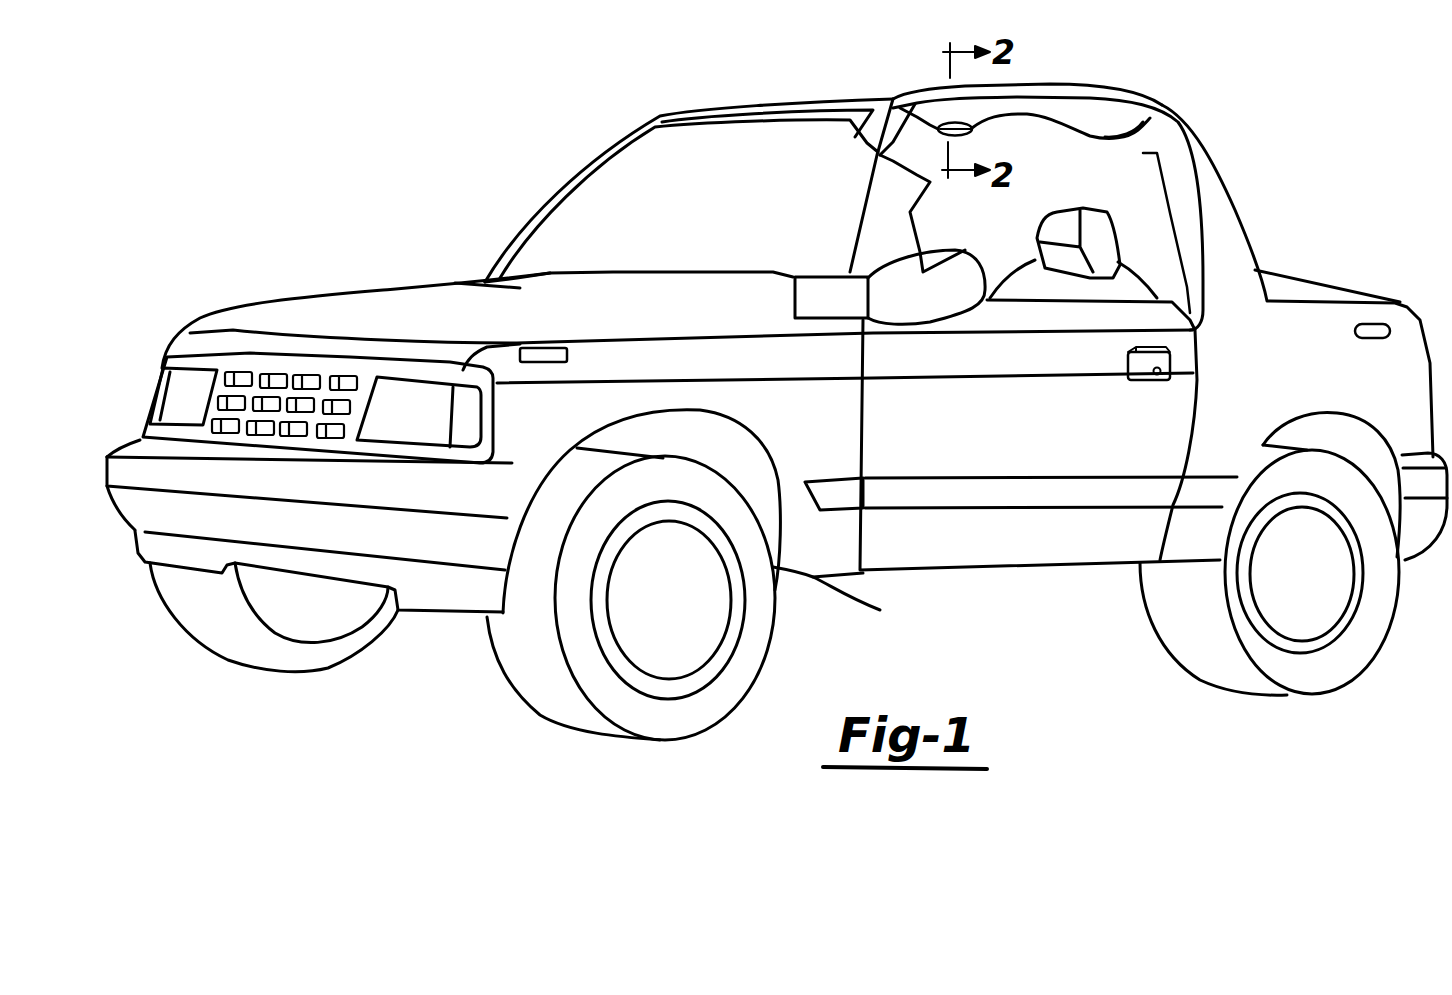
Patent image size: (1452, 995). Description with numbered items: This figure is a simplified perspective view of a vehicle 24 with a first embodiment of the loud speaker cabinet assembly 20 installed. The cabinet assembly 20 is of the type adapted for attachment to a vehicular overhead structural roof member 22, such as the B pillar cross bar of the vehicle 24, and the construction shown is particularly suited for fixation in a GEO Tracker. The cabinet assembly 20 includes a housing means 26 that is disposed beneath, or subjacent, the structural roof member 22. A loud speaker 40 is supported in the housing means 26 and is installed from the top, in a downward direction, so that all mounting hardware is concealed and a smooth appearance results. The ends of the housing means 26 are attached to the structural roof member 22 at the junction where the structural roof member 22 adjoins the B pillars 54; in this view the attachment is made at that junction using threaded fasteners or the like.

The loud speaker cabinet assembly 20 is at (1095, 156).
The structural roof member 22 is at (1097, 97).
The vehicle 24 is at (311, 300).
The housing means 26 is at (1036, 128).
The loud speaker 40 is at (916, 134).
The B pillar 54 is at (1208, 188).